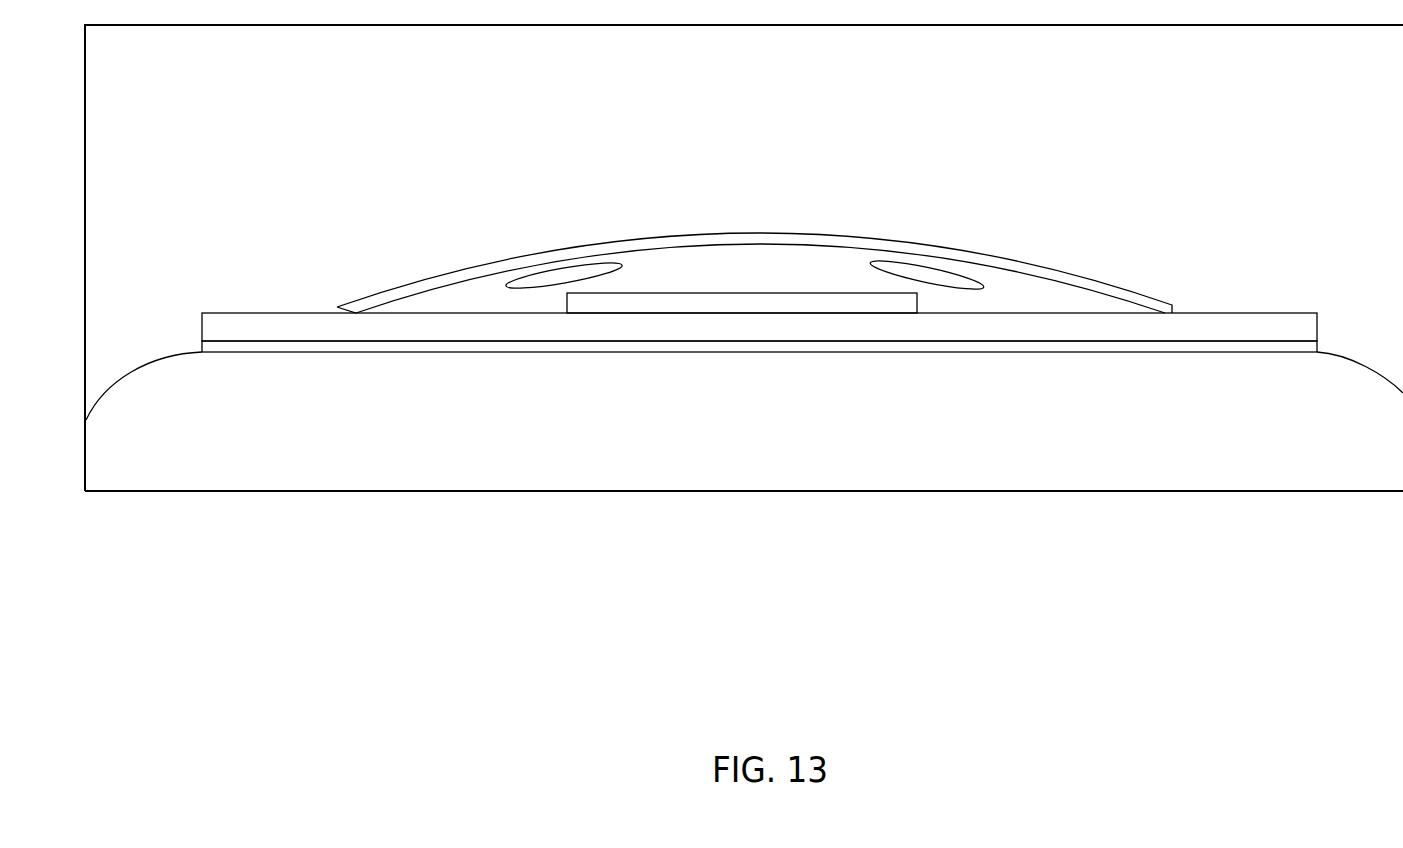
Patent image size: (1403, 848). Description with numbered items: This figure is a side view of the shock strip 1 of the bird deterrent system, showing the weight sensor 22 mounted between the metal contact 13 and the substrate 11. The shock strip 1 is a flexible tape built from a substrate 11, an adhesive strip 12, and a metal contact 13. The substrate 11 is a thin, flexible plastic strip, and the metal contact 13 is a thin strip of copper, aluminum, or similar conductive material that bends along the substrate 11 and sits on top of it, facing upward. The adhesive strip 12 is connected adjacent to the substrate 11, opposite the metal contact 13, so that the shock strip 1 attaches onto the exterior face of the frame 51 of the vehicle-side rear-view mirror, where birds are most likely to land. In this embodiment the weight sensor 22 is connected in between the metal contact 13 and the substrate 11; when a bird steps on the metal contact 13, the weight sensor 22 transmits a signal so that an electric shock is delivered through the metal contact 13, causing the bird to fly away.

The shock strip 1 is at (786, 214).
The substrate 11 is at (250, 322).
The adhesive strip 12 is at (1313, 349).
The metal contact 13 is at (754, 238).
The weight sensor 22 is at (843, 298).
The frame 51 is at (740, 430).